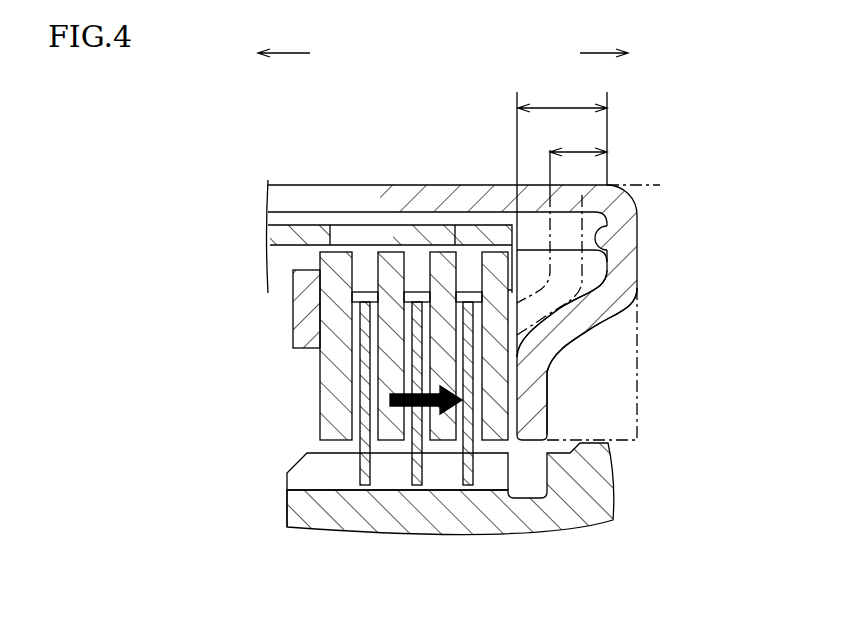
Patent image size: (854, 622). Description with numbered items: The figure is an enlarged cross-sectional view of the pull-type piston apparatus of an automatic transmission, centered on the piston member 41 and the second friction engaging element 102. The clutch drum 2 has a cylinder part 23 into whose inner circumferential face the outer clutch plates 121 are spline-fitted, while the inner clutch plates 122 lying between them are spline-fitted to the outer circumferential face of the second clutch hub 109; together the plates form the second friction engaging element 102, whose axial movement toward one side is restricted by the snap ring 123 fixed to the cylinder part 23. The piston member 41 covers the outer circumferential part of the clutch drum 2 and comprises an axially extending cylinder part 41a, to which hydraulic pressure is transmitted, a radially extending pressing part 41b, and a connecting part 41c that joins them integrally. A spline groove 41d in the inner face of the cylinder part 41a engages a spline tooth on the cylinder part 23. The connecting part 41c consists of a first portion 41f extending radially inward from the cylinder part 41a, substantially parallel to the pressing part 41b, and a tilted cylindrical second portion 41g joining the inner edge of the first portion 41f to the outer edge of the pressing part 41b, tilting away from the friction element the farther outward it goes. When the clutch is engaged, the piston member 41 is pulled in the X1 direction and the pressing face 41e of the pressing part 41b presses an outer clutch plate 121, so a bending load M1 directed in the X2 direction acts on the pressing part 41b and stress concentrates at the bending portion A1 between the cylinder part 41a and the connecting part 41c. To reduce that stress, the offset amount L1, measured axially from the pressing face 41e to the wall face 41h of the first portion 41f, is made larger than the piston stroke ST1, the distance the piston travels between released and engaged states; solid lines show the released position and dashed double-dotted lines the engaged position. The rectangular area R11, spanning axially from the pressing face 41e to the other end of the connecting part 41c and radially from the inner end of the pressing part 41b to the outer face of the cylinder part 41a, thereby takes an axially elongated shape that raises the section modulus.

The clutch drum 2 is at (257, 229).
The cylinder part 23 is at (308, 235).
The piston member 41 is at (277, 163).
The cylinder part 41a is at (413, 187).
The pressing part 41b is at (543, 394).
The connecting part 41c is at (753, 243).
The spline groove 41d is at (504, 212).
The pressing face 41e is at (543, 418).
The first portion 41f is at (606, 262).
The second portion 41g is at (592, 313).
The wall face 41h is at (607, 232).
The second friction engaging element 102 is at (282, 436).
The second clutch hub 109 is at (533, 520).
The outer clutch plates 121 is at (393, 250).
The inner clutch plates 122 is at (468, 487).
The snap ring 123 is at (293, 316).
The bending portion A1 is at (641, 176).
The offset amount L1 is at (562, 130).
The load (bending moment) M1 is at (390, 400).
The rectangular area R11 is at (637, 432).
The piston stroke ST1 is at (562, 227).
The X1 direction X1 is at (266, 53).
The X2 direction X2 is at (621, 53).